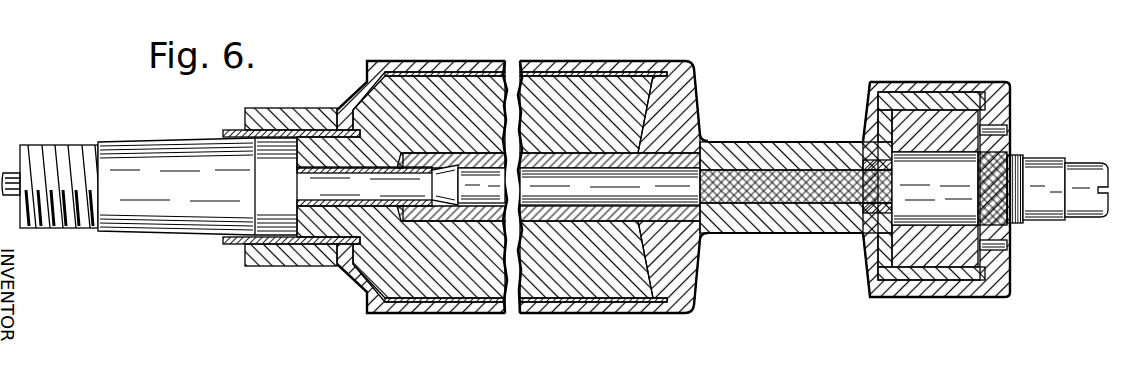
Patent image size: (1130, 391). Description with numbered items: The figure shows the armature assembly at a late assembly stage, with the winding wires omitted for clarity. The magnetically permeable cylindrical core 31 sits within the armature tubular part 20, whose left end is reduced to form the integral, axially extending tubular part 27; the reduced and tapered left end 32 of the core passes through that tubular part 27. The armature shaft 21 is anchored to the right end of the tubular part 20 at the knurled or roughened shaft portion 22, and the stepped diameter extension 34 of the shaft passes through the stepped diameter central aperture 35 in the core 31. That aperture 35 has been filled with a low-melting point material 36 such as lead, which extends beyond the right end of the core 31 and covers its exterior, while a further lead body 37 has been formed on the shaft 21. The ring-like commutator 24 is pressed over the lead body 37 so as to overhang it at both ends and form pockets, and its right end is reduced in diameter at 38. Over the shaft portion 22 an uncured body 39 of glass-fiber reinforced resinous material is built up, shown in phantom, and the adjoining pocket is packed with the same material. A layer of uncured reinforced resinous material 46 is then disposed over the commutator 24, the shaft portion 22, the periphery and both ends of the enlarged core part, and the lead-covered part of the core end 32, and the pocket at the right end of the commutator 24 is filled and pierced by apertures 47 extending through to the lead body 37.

The tubular part 20 is at (458, 62).
The armature shaft 21 is at (1081, 160).
The armature shaft portion 22 is at (772, 193).
The commutator 24 is at (925, 90).
The axially extending tubular part 27 is at (302, 112).
The cylindrical core 31 is at (550, 97).
The left end of core 32 is at (177, 200).
The stepped diameter extension 34 is at (477, 192).
The central aperture 35 is at (580, 213).
The low-melting point material 36 is at (582, 158).
The lead body 37 is at (940, 248).
The reduced diameter right end of commutator 38 is at (990, 108).
The uncured body of glass-fiber reinforced resinous material 39 is at (812, 210).
The layer of reinforced resinous material 46 is at (697, 80).
The apertures 47 is at (1008, 132).